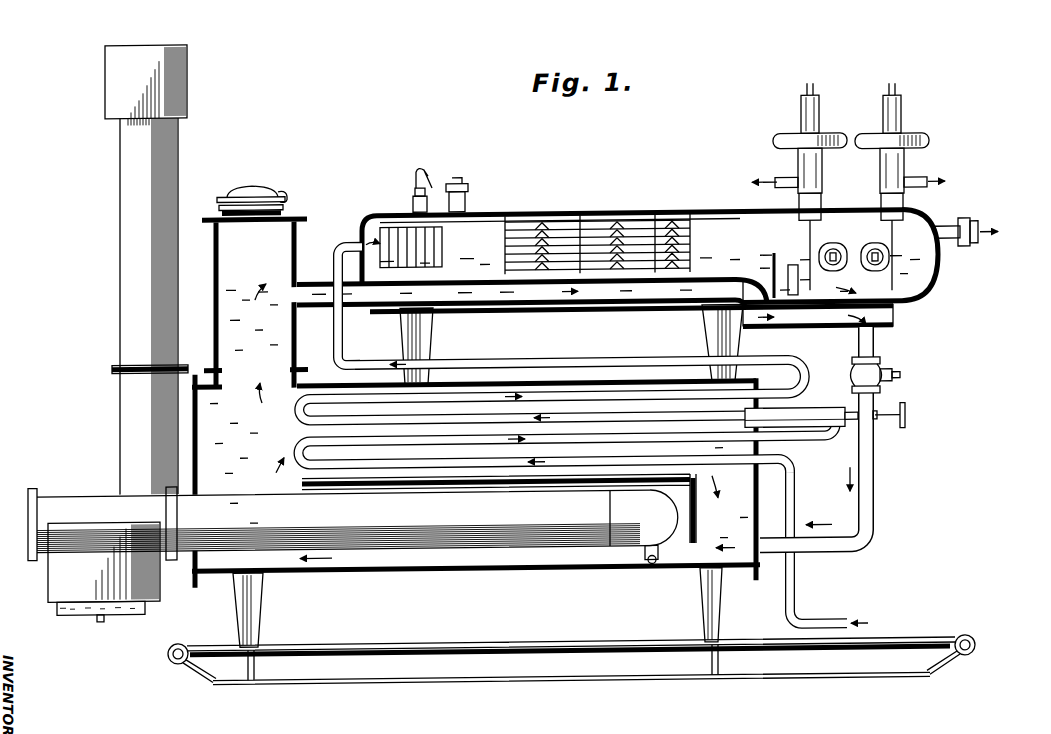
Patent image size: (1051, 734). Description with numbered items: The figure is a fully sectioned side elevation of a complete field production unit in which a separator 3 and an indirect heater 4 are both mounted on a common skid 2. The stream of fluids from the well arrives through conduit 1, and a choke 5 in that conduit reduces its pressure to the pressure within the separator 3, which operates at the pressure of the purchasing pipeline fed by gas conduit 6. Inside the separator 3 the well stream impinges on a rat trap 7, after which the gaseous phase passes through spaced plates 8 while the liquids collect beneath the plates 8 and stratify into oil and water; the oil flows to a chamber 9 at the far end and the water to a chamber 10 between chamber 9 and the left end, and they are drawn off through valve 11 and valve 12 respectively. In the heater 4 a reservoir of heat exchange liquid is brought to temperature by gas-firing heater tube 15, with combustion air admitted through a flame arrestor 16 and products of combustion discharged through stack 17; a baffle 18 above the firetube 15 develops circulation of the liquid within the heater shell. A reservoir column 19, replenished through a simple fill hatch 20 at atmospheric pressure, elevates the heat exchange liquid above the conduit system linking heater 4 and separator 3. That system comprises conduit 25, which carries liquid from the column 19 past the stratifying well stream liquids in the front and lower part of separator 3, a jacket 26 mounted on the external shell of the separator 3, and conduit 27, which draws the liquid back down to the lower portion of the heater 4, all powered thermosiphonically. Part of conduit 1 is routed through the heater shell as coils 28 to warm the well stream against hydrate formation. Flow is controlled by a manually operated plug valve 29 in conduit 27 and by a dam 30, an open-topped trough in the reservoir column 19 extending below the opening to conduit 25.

The conduit 1 is at (826, 623).
The skid 2 is at (717, 169).
The separator 3 is at (585, 213).
The heater 4 is at (505, 599).
The choke 5 is at (826, 411).
The conduit 6 is at (975, 227).
The rat trap 7 is at (388, 226).
The spaced plates 8 is at (530, 223).
The chamber 9 is at (923, 291).
The chamber 10 is at (870, 244).
The valve 11 is at (905, 160).
The valve 12 is at (798, 160).
The heater tube 15 is at (382, 549).
The flame arrestor 16 is at (160, 588).
The stack 17 is at (120, 163).
The baffle structure 18 is at (676, 492).
The reservoir column 19 is at (213, 284).
The fill hatch 20 is at (238, 185).
The conduit 25 is at (344, 298).
The jacket 26 is at (893, 329).
The conduit 27 is at (878, 505).
The coils 28 is at (490, 401).
The valve 29 is at (900, 383).
The dam 30 is at (283, 281).